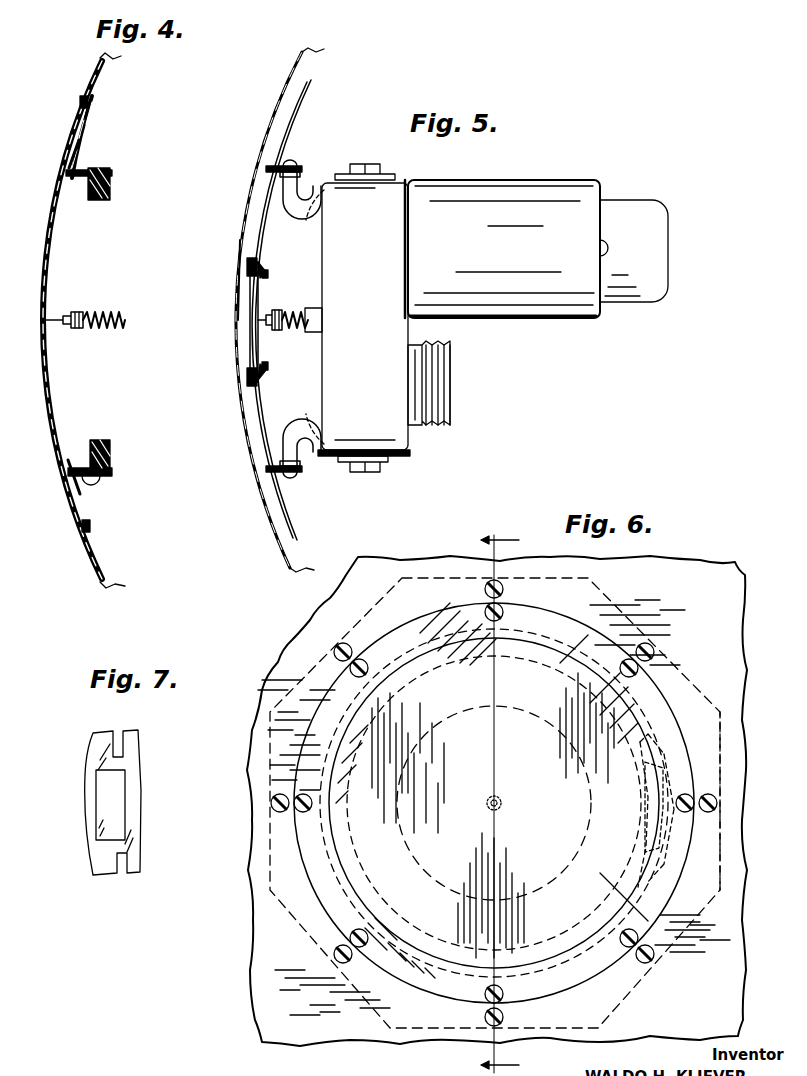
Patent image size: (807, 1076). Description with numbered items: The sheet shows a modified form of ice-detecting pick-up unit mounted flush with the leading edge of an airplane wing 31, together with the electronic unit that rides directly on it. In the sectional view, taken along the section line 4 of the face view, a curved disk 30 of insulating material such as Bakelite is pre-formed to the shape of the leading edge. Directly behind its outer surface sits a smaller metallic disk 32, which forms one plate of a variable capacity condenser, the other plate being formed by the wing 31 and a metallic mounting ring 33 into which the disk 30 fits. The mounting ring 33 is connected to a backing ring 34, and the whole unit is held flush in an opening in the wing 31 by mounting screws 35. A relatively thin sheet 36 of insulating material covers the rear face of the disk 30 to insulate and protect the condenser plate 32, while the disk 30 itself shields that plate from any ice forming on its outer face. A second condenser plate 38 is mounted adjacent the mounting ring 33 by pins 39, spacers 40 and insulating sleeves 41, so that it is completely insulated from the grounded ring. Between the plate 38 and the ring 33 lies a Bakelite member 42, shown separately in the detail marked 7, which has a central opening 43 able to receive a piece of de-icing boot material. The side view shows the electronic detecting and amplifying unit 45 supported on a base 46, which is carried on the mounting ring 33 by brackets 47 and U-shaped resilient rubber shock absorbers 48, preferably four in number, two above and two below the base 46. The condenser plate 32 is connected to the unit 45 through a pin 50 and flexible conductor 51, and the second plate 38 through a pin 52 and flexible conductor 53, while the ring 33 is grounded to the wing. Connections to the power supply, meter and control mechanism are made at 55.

In FIG. 6, the section line 4— 4 is at (500, 803).
In FIG. 6, the detail indication for insulating member 7 is at (460, 972).
In FIG. 4, the curved disk 30 is at (50, 193).
In FIG. 6, the curved disk 30 is at (356, 822).
In FIG. 4, the wing 31 is at (92, 72).
In FIG. 5, the wing 31 is at (282, 78).
In FIG. 6, the wing 31 is at (288, 648).
In FIG. 4, the metallic disk 32 is at (50, 275).
In FIG. 6, the metallic disk 32 is at (494, 803).
In FIG. 4, the mounting ring 33 is at (66, 150).
In FIG. 6, the mounting ring 33 is at (294, 770).
In FIG. 4, the backing ring 34 is at (86, 123).
In FIG. 5, the backing ring 34 is at (238, 239).
In FIG. 6, the backing ring 34 is at (416, 574).
In FIG. 4, the mounting screws 35 is at (76, 104).
In FIG. 6, the mounting screws 35 is at (503, 586).
In FIG. 4, the thin sheet of insulating material 36 is at (58, 210).
In FIG. 5, the second condenser plate 38 is at (256, 295).
In FIG. 5, the pins 39 is at (268, 274).
In FIG. 6, the pins 39 is at (658, 736).
In FIG. 5, the spacers 40 is at (246, 278).
In FIG. 5, the insulating sleeves 41 is at (262, 266).
In FIG. 5, the member 42 is at (242, 345).
In FIG. 6, the member 42 is at (664, 835).
In FIG. 7, the member 42 is at (130, 763).
In FIG. 6, the central opening 43 is at (644, 820).
In FIG. 7, the central opening 43 is at (100, 826).
In FIG. 5, the electronic detecting and amplifying unit 45 is at (596, 322).
In FIG. 5, the base 46 is at (410, 443).
In FIG. 4, the brackets 47 is at (78, 172).
In FIG. 5, the brackets 47 is at (274, 168).
In FIG. 4, the U-shaped resilient shock absorbers 48 is at (112, 187).
In FIG. 5, the U-shaped resilient shock absorbers 48 is at (294, 199).
In FIG. 4, the pin 50 is at (64, 316).
In FIG. 6, the pin 50 is at (503, 803).
In FIG. 4, the flexible conductor 51 is at (108, 312).
In FIG. 6, the flexible conductor 51 is at (486, 794).
In FIG. 5, the pin 52 is at (268, 326).
In FIG. 5, the flexible conductor 53 is at (296, 334).
In FIG. 5, the connections 55 is at (458, 408).